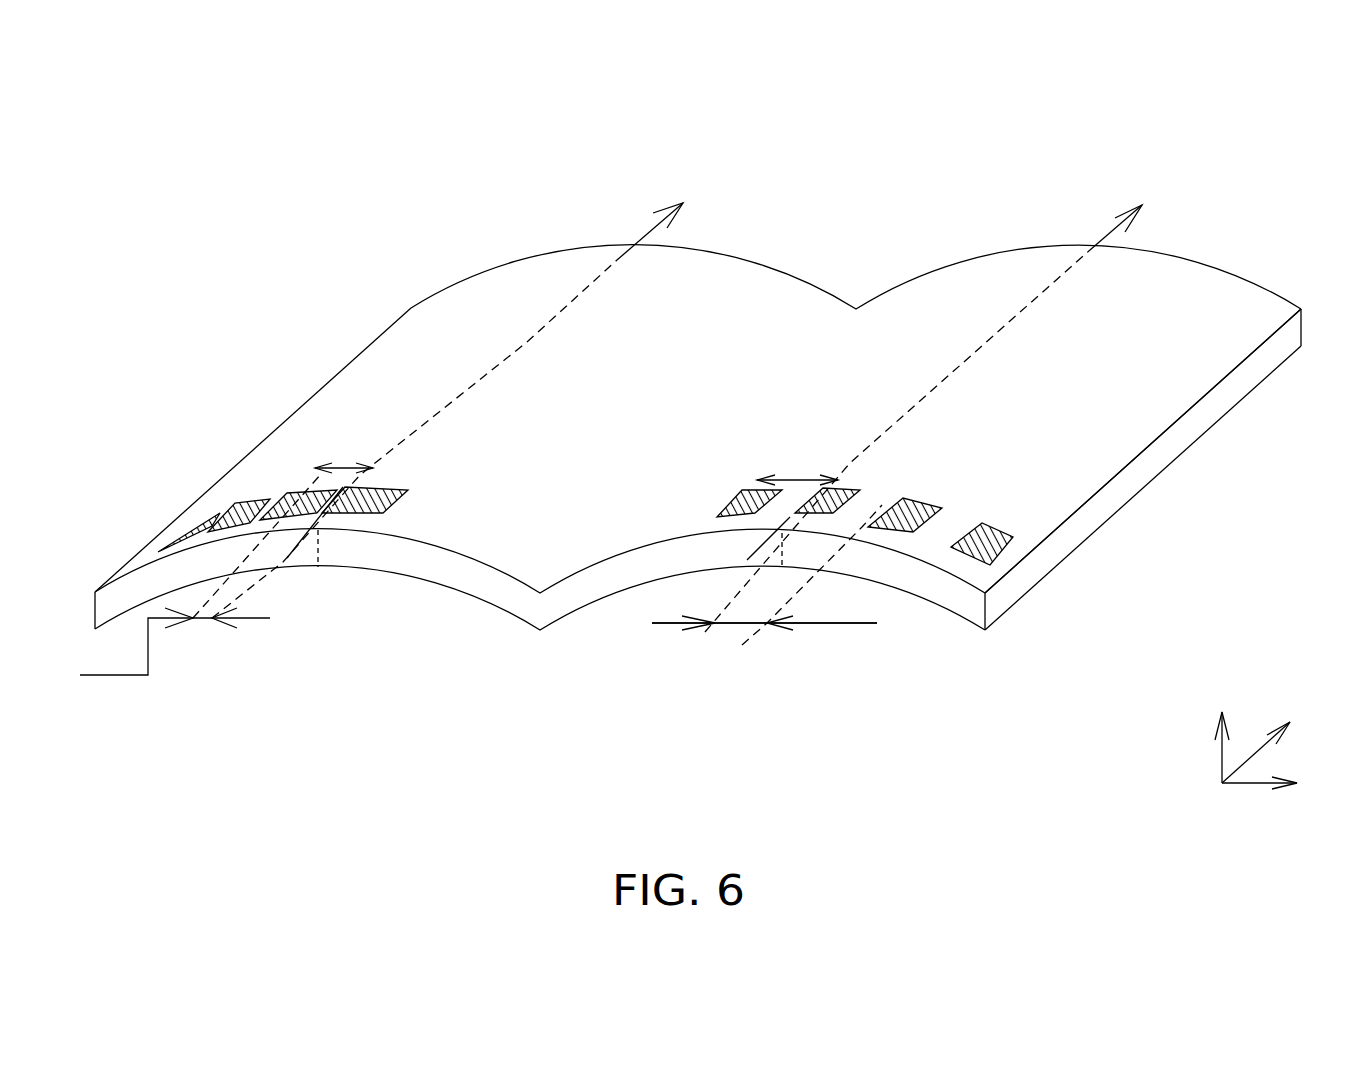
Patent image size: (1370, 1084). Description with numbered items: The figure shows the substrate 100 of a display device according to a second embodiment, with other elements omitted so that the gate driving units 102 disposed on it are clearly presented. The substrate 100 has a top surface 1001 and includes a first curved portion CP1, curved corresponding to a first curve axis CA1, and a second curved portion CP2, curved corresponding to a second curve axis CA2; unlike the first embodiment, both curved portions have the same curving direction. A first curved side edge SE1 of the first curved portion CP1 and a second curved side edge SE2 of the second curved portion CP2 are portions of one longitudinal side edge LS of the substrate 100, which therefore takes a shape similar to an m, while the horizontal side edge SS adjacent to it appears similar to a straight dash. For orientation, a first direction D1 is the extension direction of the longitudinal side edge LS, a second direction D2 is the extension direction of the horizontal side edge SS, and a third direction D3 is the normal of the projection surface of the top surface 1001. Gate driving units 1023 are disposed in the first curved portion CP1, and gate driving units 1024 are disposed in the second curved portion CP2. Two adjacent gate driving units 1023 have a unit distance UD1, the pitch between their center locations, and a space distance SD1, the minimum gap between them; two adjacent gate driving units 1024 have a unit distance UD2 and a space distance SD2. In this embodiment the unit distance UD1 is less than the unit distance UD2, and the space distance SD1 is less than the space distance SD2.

The substrate 100 is at (1213, 190).
The top surface 1001 is at (933, 290).
The gate driving unit 102 is at (555, 522).
The gate driving units 1023 is at (287, 493).
The gate driving units 1024 is at (923, 453).
The first curved portion CP1 is at (568, 292).
The second curved portion CP2 is at (1005, 348).
The first curve axis CA1 is at (645, 238).
The second curve axis CA2 is at (1097, 243).
The longitudinal side edge LS is at (523, 582).
The first curved side edge SE1 is at (328, 537).
The second curved side edge SE2 is at (755, 532).
The horizontal side edge SS is at (1143, 452).
The space distance SD1 is at (122, 649).
The space distance SD2 is at (764, 608).
The unit distance UD1 is at (344, 452).
The unit distance UD2 is at (797, 462).
The first direction D1 is at (1281, 786).
The second direction D2 is at (1265, 733).
The third direction D3 is at (1220, 726).